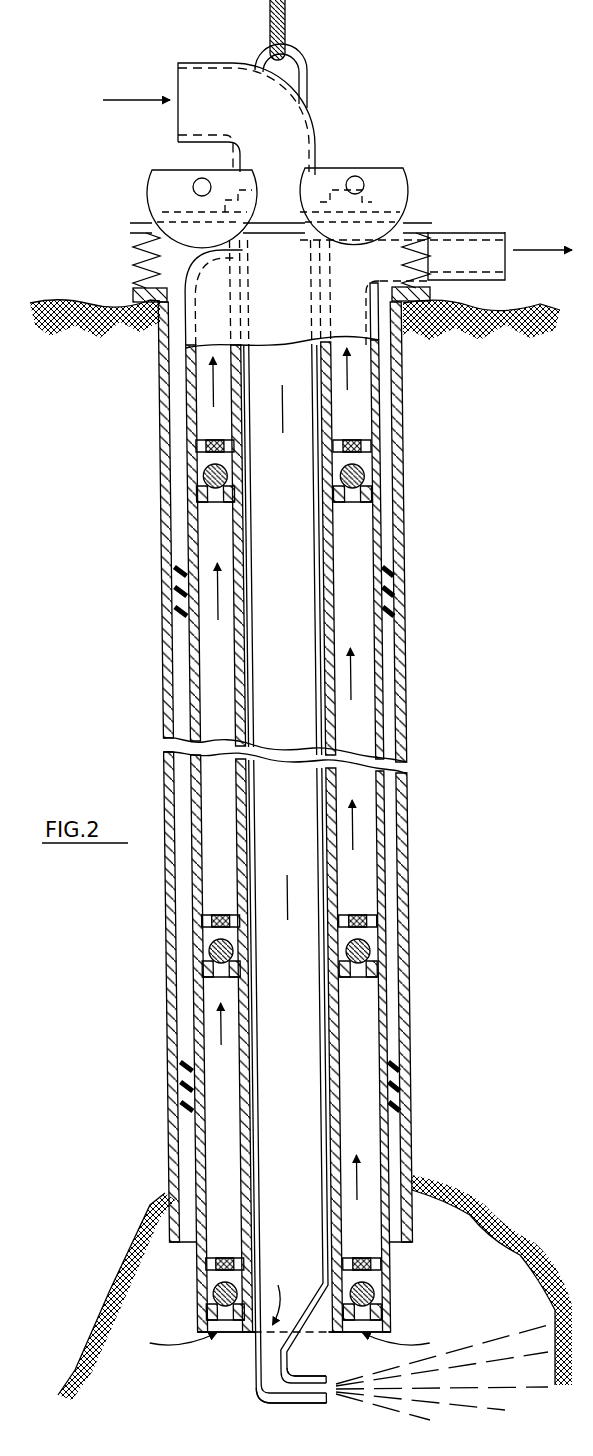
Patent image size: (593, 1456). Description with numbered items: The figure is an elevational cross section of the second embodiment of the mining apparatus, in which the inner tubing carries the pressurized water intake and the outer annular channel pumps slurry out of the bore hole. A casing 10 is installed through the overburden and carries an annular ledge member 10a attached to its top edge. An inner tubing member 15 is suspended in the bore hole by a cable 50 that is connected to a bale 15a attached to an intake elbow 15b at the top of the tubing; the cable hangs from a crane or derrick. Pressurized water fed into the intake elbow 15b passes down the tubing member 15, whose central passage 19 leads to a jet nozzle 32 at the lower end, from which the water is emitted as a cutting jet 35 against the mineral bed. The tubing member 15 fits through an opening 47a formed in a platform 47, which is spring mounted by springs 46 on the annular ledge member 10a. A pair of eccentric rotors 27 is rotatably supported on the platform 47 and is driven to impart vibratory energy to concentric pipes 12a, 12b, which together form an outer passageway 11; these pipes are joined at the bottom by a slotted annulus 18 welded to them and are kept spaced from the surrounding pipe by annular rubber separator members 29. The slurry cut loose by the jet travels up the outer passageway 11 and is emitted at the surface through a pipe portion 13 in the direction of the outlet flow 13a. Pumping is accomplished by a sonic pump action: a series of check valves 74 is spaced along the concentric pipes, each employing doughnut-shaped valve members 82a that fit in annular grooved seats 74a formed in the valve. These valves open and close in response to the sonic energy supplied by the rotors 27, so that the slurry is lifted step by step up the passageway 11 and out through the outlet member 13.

The casing 10 is at (162, 513).
The annular ledge member 10a is at (135, 292).
The outer passageway 11 is at (355, 1002).
The concentric pipe 12a is at (373, 527).
The concentric pipe 12b is at (333, 586).
The pipe portion 13 is at (463, 242).
The outlet flow direction 13a is at (542, 234).
The inner tubing member 15 is at (246, 492).
The bale 15a is at (260, 46).
The intake elbow 15b is at (190, 84).
The slotted annulus 18 is at (221, 1336).
The central flow passage 19 is at (292, 128).
The eccentric rotors 27 is at (163, 165).
The annular rubber separator members 29 is at (174, 1090).
The jet nozzle 32 is at (294, 1382).
The cutting jet 35 is at (483, 1355).
The springs 46 is at (135, 258).
The platform 47 is at (402, 214).
The opening 47a is at (268, 186).
The cable 50 is at (286, 26).
The valve members 74 is at (357, 462).
The annular grooved seats 74a is at (354, 937).
The doughnut-shaped valve members 82a is at (216, 937).